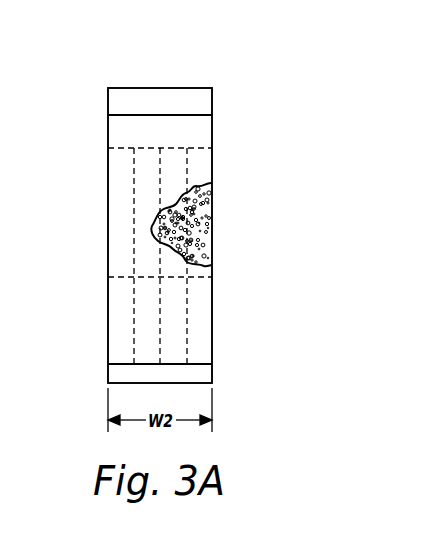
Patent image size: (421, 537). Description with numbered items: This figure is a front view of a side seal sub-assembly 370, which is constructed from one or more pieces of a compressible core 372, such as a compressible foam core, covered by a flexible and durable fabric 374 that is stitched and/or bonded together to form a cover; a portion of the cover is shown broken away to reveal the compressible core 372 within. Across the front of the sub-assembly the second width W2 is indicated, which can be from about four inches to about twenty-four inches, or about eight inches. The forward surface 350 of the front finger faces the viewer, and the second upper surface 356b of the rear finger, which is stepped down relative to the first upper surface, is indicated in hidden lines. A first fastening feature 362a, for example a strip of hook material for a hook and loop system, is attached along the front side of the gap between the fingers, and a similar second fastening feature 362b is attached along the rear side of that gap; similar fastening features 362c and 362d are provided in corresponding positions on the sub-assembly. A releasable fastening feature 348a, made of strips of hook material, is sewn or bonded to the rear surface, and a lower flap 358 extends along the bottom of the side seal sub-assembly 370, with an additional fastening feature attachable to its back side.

The side seal sub-assembly 370 is at (244, 89).
The top edge strip 362c is at (108, 128).
The first fastening feature 362a is at (212, 118).
The second upper surface 356b is at (149, 148).
The releasable fastening feature 348a is at (143, 188).
The forward surface 350 is at (122, 238).
The compressible core 372 is at (212, 226).
The second fastening feature 362b is at (212, 301).
The left side edge 362d is at (108, 302).
The fabric 374 is at (198, 330).
The lower flap 358 is at (118, 372).